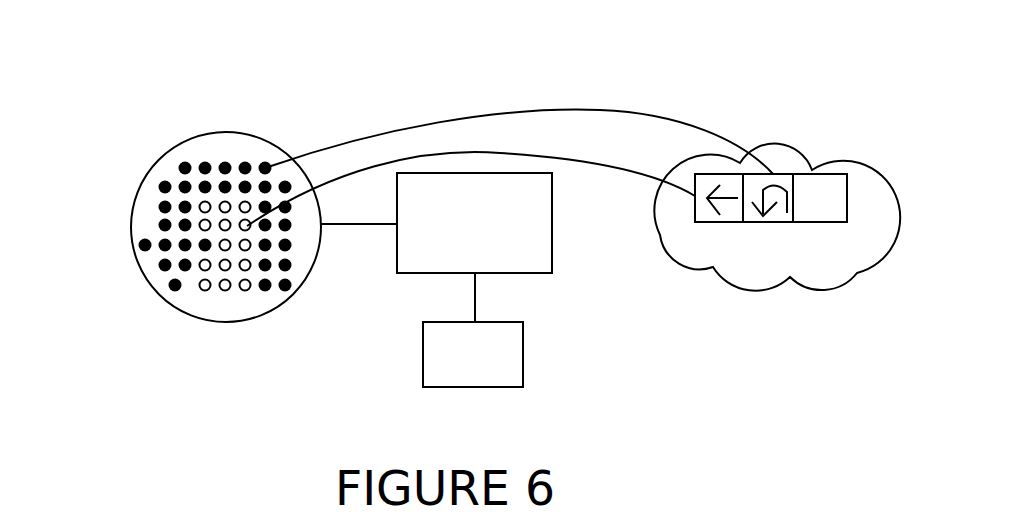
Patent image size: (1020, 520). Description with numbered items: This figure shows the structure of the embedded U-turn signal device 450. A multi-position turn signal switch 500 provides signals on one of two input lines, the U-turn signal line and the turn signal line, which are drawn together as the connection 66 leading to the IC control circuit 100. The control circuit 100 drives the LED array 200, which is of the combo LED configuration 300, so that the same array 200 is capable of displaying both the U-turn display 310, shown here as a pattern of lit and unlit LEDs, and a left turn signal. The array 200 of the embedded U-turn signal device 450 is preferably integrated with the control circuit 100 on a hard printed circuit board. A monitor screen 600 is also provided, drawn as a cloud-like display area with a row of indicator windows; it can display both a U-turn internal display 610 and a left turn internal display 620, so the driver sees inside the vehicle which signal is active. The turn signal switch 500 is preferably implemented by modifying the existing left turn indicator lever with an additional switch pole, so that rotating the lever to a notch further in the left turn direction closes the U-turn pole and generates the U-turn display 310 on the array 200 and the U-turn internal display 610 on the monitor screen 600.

The embedded U-turn signal device 450 is at (112, 158).
The U-turn display 310 is at (238, 126).
The LED array 200 is at (202, 302).
The combo LED configuration 300 is at (215, 227).
The IC control circuit 100 is at (543, 252).
The connection line 66 is at (470, 291).
The multi-position turn signal switch 500 is at (520, 332).
The monitor screen 600 is at (777, 253).
The U-turn internal display 610 is at (757, 222).
The left turn internal display 620 is at (694, 207).